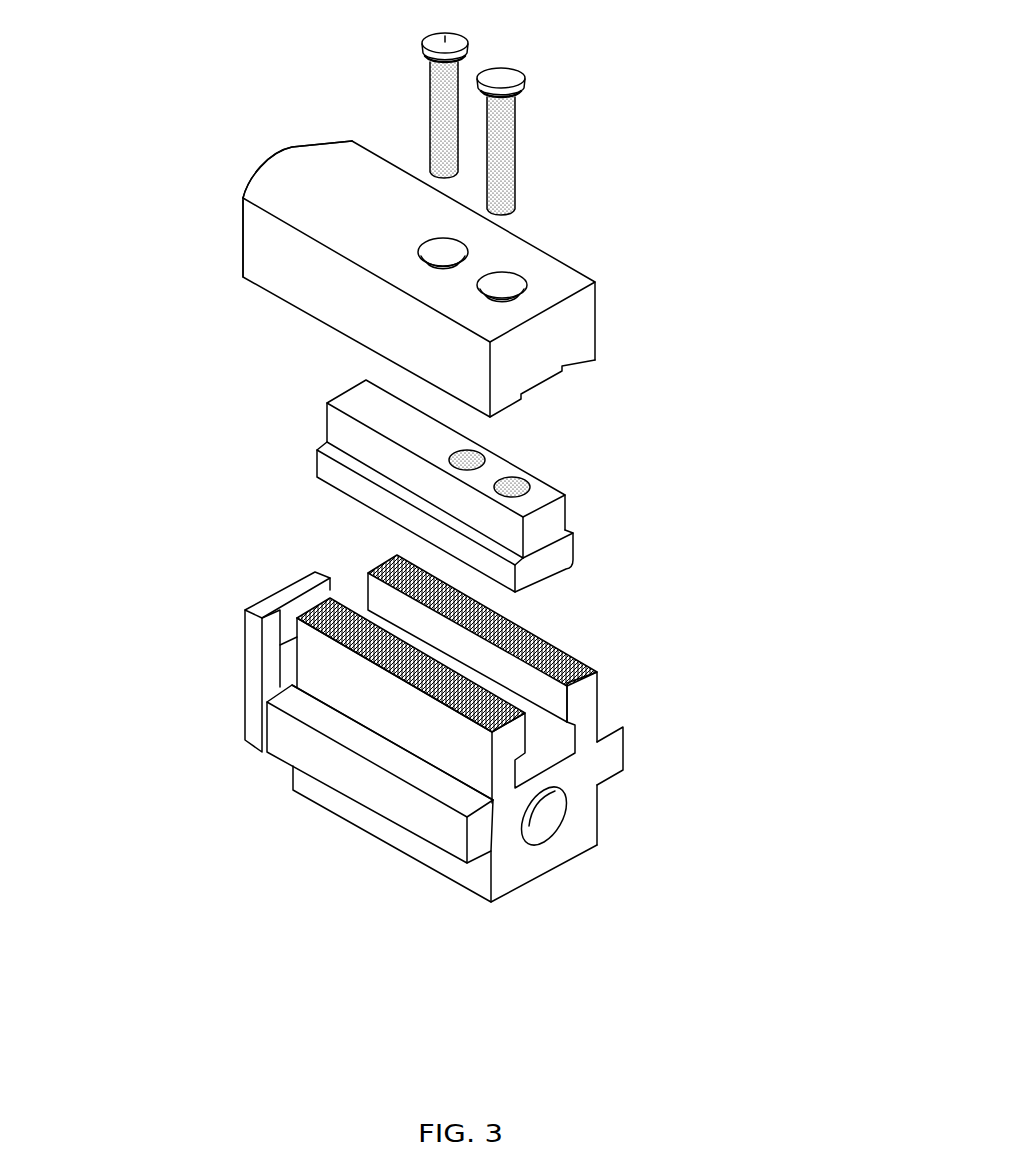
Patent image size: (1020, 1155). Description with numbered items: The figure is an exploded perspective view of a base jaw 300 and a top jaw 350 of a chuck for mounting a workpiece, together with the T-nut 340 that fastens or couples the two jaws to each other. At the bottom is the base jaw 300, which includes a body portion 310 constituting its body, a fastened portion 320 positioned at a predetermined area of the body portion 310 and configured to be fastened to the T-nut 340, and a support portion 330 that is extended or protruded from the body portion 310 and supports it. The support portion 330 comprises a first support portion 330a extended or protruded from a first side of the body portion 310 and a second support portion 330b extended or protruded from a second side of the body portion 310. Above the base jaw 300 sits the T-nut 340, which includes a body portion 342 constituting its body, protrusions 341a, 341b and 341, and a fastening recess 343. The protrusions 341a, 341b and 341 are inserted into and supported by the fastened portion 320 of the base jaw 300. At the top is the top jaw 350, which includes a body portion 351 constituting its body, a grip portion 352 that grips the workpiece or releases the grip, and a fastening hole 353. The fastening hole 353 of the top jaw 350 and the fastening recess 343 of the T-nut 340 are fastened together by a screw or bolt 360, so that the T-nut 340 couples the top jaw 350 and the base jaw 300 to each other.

The base jaw 300 is at (417, 778).
The body portion 310 is at (587, 702).
The fastened portion 320 is at (390, 610).
The support portion 330 is at (494, 869).
The first support portion 330a is at (445, 838).
The second support portion 330b is at (623, 757).
The T-nut 340 is at (442, 524).
The protrusion 341 is at (570, 555).
The protrusion 341a is at (519, 577).
The protrusion 341b is at (573, 545).
The body portion 342 is at (566, 503).
The fastening recess 343 is at (516, 482).
The top jaw 350 is at (457, 224).
The body portion 351 is at (390, 187).
The grip portion 352 is at (243, 173).
The fastening hole 353 is at (505, 277).
The screw or bolt 360 is at (450, 32).